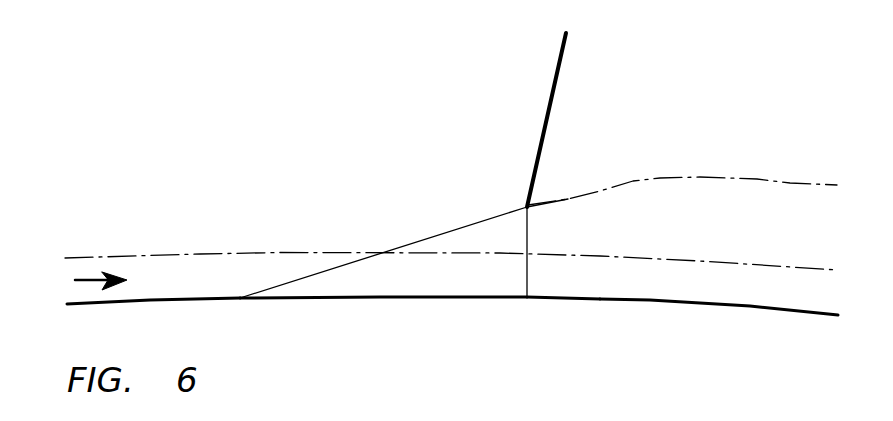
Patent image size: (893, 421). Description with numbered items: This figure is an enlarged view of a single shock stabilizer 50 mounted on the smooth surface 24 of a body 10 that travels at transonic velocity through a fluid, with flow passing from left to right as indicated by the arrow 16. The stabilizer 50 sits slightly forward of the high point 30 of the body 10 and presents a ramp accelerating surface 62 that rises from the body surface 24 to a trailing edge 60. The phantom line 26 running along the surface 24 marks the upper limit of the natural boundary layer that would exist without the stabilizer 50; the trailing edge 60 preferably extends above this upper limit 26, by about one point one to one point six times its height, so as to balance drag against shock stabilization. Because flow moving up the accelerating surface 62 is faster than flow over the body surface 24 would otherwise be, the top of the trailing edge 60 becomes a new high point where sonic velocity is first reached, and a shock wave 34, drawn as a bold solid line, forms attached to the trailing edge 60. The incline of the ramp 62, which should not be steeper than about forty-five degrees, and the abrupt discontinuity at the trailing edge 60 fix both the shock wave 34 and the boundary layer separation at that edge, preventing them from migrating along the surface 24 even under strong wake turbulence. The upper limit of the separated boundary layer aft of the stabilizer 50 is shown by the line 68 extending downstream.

The body 10 is at (222, 320).
The arrow 16 is at (98, 276).
The body surface 24 is at (657, 300).
The upper limit of the natural boundary layer 26 is at (278, 252).
The high point 30 is at (570, 302).
The shock wave 34 is at (540, 148).
The shock stabilizer 50 is at (462, 243).
The trailing edge 60 is at (528, 236).
The ramp accelerating surface 62 is at (483, 217).
The upper limit of the separated boundary layer 68 is at (687, 177).